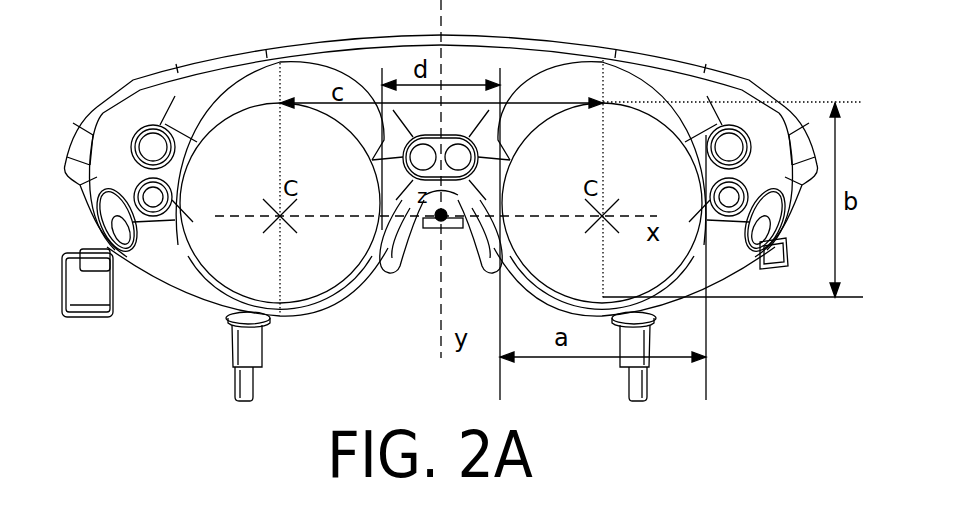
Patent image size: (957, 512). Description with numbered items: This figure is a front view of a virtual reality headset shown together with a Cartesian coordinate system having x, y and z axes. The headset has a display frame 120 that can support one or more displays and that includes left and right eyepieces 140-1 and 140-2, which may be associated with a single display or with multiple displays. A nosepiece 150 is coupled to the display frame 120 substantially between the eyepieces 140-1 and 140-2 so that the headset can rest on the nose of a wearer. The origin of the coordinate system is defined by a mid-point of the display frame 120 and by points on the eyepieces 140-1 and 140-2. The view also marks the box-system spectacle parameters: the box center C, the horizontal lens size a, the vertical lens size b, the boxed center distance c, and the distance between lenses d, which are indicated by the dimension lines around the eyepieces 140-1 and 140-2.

The display frame 120 is at (505, 52).
The right eyepiece 140-1 is at (672, 176).
The left eyepiece 140-2 is at (262, 176).
The nosepiece 150 is at (389, 270).